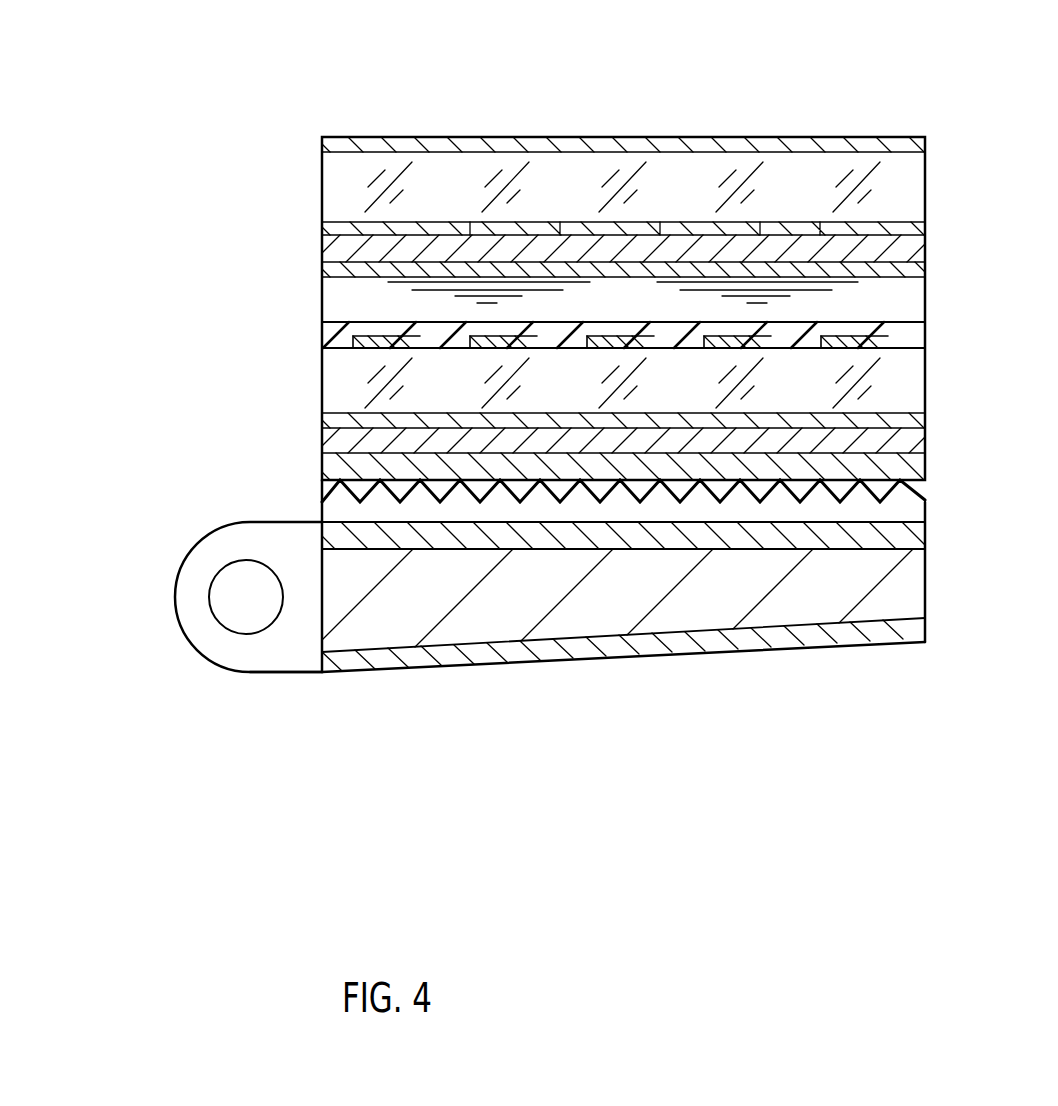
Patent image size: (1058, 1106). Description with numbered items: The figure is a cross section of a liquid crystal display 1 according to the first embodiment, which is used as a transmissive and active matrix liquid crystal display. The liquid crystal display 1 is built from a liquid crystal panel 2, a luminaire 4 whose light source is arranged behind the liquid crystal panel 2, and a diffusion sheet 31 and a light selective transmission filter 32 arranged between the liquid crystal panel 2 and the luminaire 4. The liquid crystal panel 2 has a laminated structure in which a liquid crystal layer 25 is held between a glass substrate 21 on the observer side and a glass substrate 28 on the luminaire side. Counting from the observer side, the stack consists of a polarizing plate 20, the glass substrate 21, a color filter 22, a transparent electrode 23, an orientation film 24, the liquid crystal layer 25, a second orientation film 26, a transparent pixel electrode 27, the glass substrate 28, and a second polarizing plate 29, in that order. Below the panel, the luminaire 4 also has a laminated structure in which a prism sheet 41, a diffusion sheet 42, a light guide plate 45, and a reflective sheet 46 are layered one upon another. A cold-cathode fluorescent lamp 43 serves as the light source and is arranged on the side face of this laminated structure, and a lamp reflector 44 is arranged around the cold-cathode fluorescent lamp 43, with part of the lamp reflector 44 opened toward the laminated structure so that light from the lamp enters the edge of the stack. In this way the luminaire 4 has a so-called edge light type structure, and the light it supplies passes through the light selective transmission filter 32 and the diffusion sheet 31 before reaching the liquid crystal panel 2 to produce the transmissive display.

The liquid crystal display 1 is at (760, 75).
The liquid crystal panel 2 is at (219, 87).
The luminaire 4 is at (83, 492).
The polarizing plate 20 is at (324, 143).
The glass substrate 21 is at (342, 176).
The color filter 22 is at (330, 243).
The transparent electrode 23 is at (321, 258).
The orientation film 24 is at (322, 272).
The liquid crystal layer 25 is at (338, 292).
The orientation film 26 is at (321, 342).
The transparent pixel electrode 27 is at (323, 337).
The glass substrate 28 is at (340, 367).
The polarizing plate 29 is at (321, 418).
The diffusion sheet 31 is at (340, 442).
The light selective transmission filter 32 is at (340, 470).
The prism sheet 41 is at (340, 501).
The diffusion sheet 42 is at (340, 540).
The cold-cathode fluorescent lamp 43 is at (237, 588).
The lamp reflector 44 is at (173, 607).
The light guide plate 45 is at (340, 613).
The reflective sheet 46 is at (342, 662).